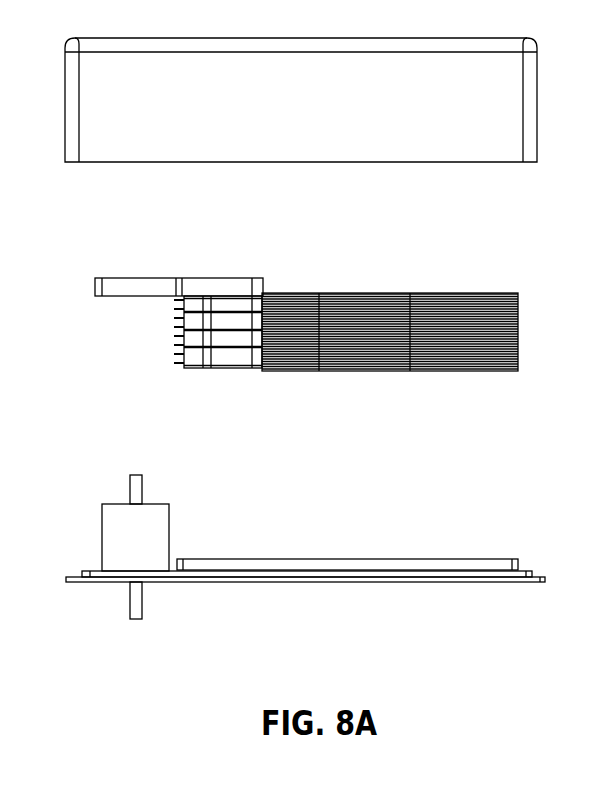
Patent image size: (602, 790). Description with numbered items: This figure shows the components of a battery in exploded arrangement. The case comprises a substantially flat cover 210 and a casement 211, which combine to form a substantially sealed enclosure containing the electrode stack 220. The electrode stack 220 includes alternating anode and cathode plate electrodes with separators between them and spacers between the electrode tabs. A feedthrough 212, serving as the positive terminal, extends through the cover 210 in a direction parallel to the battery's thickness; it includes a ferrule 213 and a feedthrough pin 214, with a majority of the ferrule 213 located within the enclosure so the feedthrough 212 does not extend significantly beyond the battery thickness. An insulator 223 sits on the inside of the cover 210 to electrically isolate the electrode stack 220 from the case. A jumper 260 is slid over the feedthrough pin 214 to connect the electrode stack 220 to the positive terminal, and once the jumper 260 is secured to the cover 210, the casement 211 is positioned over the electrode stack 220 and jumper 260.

The casement 211 is at (274, 115).
The electrode stack 220 is at (497, 272).
The jumper 260 is at (161, 283).
The cover 210 is at (416, 579).
The insulator 223 is at (407, 562).
The feedthrough 212 is at (170, 543).
The ferrule 213 is at (112, 551).
The feedthrough pin 214 is at (135, 616).